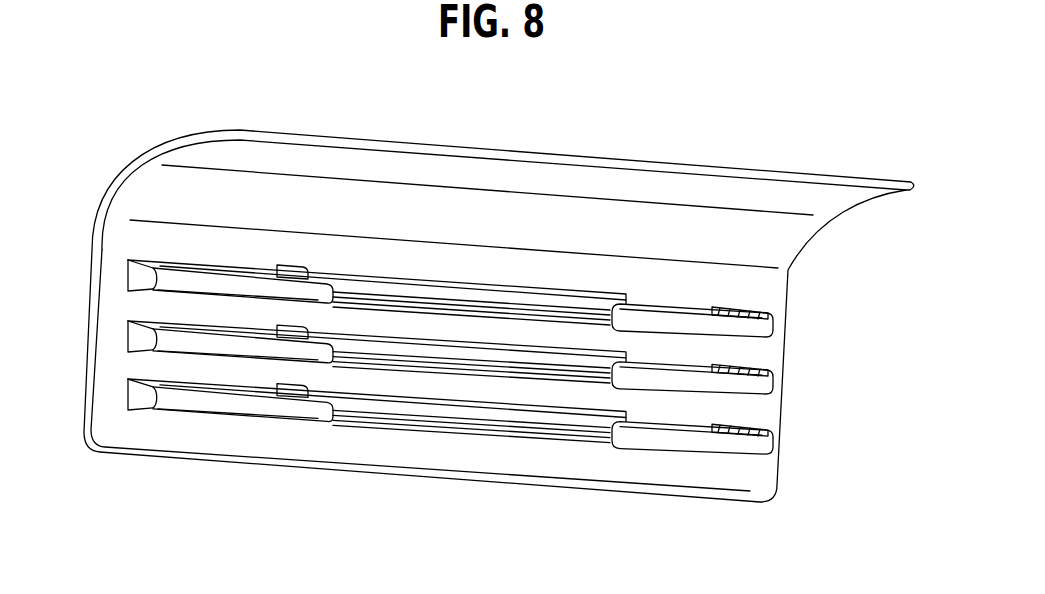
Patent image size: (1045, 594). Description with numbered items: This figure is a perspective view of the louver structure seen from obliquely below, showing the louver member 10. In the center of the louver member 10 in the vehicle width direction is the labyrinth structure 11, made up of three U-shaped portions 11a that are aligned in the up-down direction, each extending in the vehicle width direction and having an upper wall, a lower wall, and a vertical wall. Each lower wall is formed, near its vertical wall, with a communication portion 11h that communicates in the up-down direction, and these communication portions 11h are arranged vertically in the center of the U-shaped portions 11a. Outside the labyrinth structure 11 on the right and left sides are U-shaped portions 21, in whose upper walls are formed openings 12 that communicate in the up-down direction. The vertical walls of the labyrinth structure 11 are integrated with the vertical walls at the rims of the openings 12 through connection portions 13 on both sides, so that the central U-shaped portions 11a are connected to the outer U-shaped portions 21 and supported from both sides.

The louver member 10 is at (804, 131).
The labyrinth structure 11 is at (447, 260).
The U-shaped portion 11a is at (504, 391).
The communication portion 11h is at (417, 293).
The opening 12 is at (207, 312).
The connection portion 13 is at (358, 455).
The U-shaped portion 21 is at (258, 259).